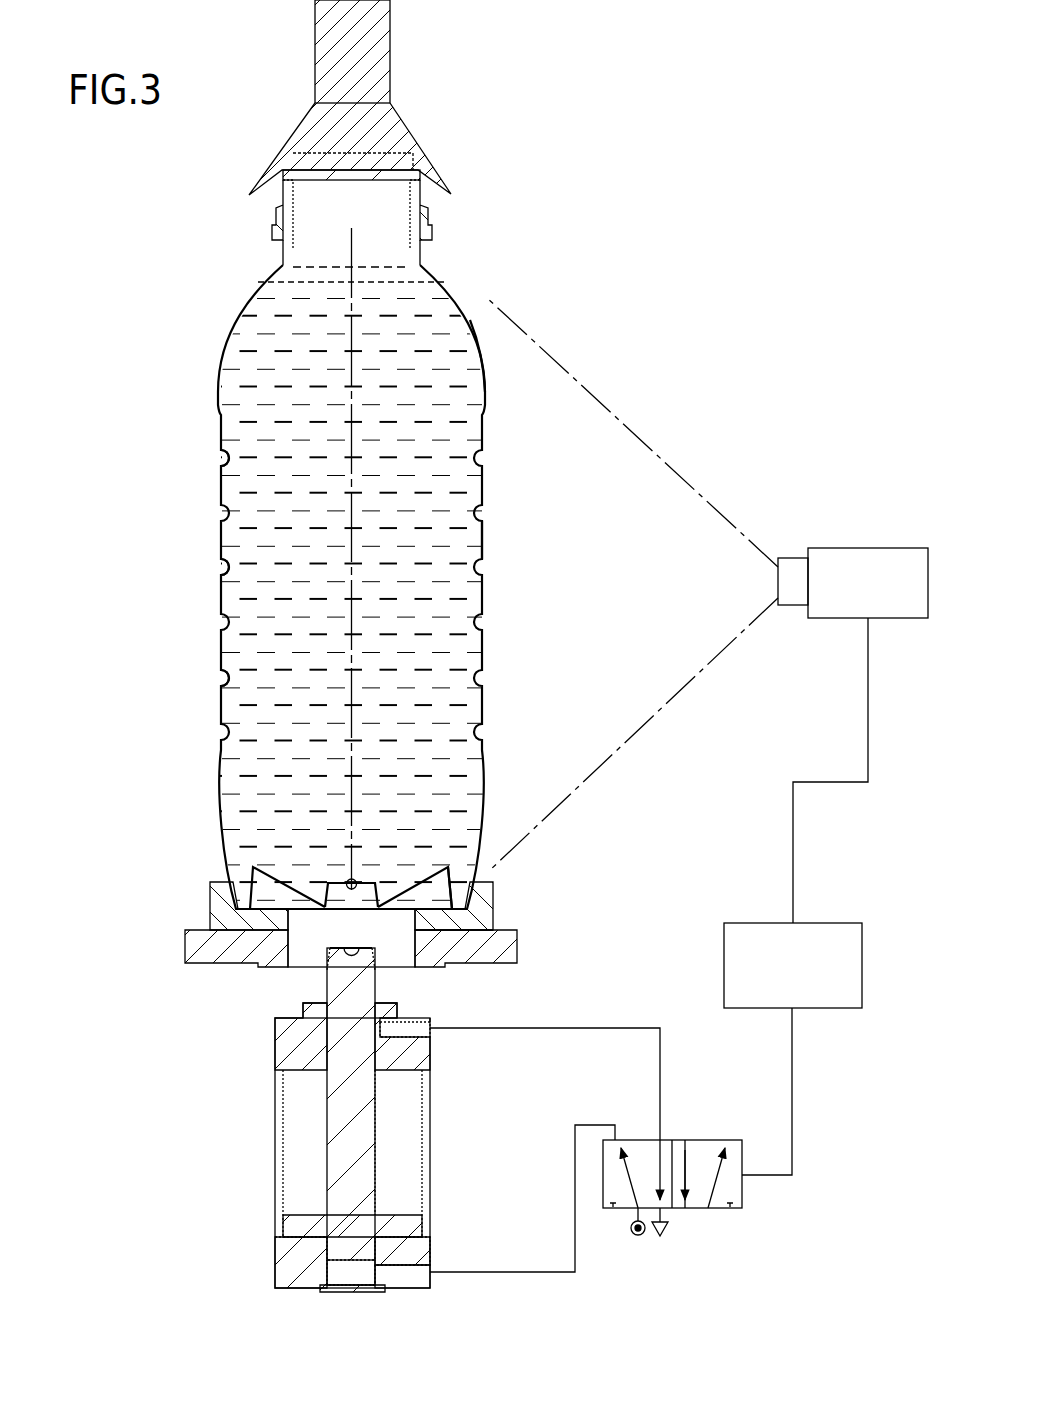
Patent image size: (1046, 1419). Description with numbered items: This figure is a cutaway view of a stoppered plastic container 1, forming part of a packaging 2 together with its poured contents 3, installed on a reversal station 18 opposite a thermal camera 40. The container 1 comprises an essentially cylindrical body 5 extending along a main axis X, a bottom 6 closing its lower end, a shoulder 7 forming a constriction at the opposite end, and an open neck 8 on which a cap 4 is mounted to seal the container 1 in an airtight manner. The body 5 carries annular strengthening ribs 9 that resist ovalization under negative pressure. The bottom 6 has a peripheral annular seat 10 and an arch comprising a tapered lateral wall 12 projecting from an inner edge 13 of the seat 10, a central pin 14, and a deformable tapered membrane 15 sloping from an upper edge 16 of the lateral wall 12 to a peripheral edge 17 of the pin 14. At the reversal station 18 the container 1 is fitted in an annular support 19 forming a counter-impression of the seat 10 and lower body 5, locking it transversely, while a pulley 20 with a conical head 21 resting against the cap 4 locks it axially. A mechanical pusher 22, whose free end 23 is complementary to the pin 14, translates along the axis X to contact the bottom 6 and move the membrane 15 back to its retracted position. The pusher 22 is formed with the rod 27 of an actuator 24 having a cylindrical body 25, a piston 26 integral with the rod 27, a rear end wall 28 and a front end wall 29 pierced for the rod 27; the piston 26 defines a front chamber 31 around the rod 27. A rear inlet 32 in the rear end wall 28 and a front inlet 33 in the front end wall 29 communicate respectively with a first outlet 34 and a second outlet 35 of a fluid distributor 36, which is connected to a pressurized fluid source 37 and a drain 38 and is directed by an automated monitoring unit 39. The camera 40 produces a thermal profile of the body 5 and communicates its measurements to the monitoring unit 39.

The container 1 is at (460, 296).
The packaging 2 is at (205, 283).
The contents 3 is at (283, 366).
The cap 4 is at (275, 211).
The body 5 is at (485, 586).
The bottom 6 is at (334, 912).
The shoulder 7 is at (484, 346).
The neck 8 is at (415, 206).
The annular strengthening ribs 9 is at (226, 457).
The peripheral annular seat 10 is at (460, 914).
The tapered lateral wall 12 is at (452, 905).
The inner edge 13 is at (452, 924).
The central pin 14 is at (331, 883).
The tapered membrane 15 is at (418, 887).
The upper edge 16 is at (452, 880).
The peripheral edge 17 is at (378, 906).
The reversal station 18 is at (163, 922).
The annular support 19 is at (213, 898).
The pulley 20 is at (393, 51).
The conical head 21 is at (398, 130).
The mechanical pusher 22 is at (332, 992).
The free end 23 is at (365, 968).
The actuator 24 is at (425, 1136).
The cylindrical body 25 is at (430, 1135).
The piston 26 is at (290, 1225).
The rod 27 is at (343, 1128).
The rear end wall 28 is at (280, 1278).
The front end wall 29 is at (280, 1032).
The front chamber 31 is at (407, 1102).
The rear inlet 32 is at (400, 1272).
The front inlet 33 is at (415, 1032).
The first outlet 34 is at (618, 1137).
The second outlet 35 is at (662, 1138).
The fluid distributor 36 is at (700, 1140).
The fluid source 37 is at (635, 1237).
The drain 38 is at (663, 1233).
The automated monitoring unit 39 is at (807, 977).
The thermal camera 40 is at (881, 594).
The main axis X is at (353, 470).